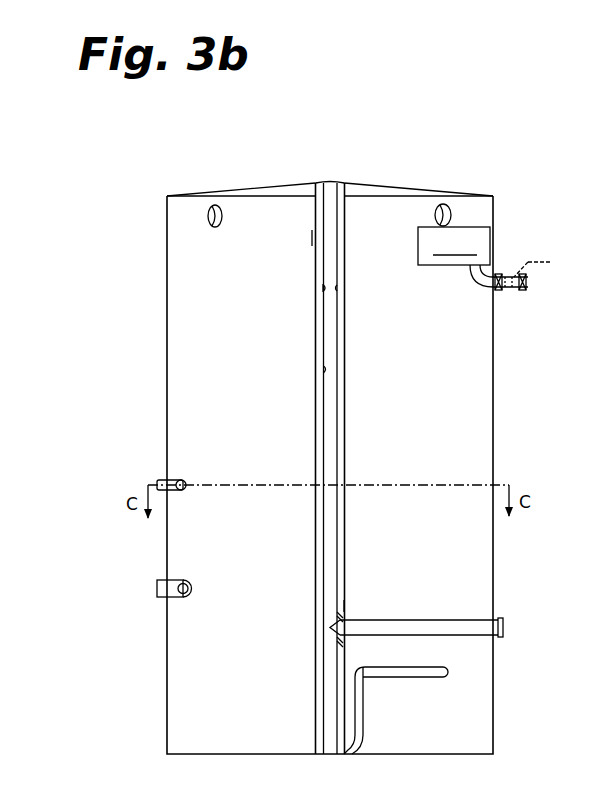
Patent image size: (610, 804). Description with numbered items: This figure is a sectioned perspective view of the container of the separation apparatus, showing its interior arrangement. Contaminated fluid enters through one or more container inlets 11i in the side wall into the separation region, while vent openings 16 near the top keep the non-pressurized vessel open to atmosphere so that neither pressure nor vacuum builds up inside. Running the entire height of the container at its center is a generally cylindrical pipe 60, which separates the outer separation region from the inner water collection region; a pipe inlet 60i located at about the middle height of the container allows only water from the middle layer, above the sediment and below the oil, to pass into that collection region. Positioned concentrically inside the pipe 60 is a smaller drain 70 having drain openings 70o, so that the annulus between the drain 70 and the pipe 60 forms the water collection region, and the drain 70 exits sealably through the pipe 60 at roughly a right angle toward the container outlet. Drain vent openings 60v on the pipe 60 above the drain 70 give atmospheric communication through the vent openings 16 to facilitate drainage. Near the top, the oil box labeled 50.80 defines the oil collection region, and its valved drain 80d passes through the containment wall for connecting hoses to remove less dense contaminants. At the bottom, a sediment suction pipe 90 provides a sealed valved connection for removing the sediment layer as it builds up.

The vent openings 16 is at (208, 214).
The pipe 60 is at (346, 336).
The drain vent openings 60v is at (312, 237).
The drain openings 70o is at (322, 290).
The drain 70 is at (326, 369).
The pipe inlet 60i is at (352, 606).
The control / pump unit 50.80 is at (454, 234).
The valved drain 80d is at (524, 262).
The container inlet 11i is at (155, 476).
The sediment suction pipe 90 is at (368, 705).